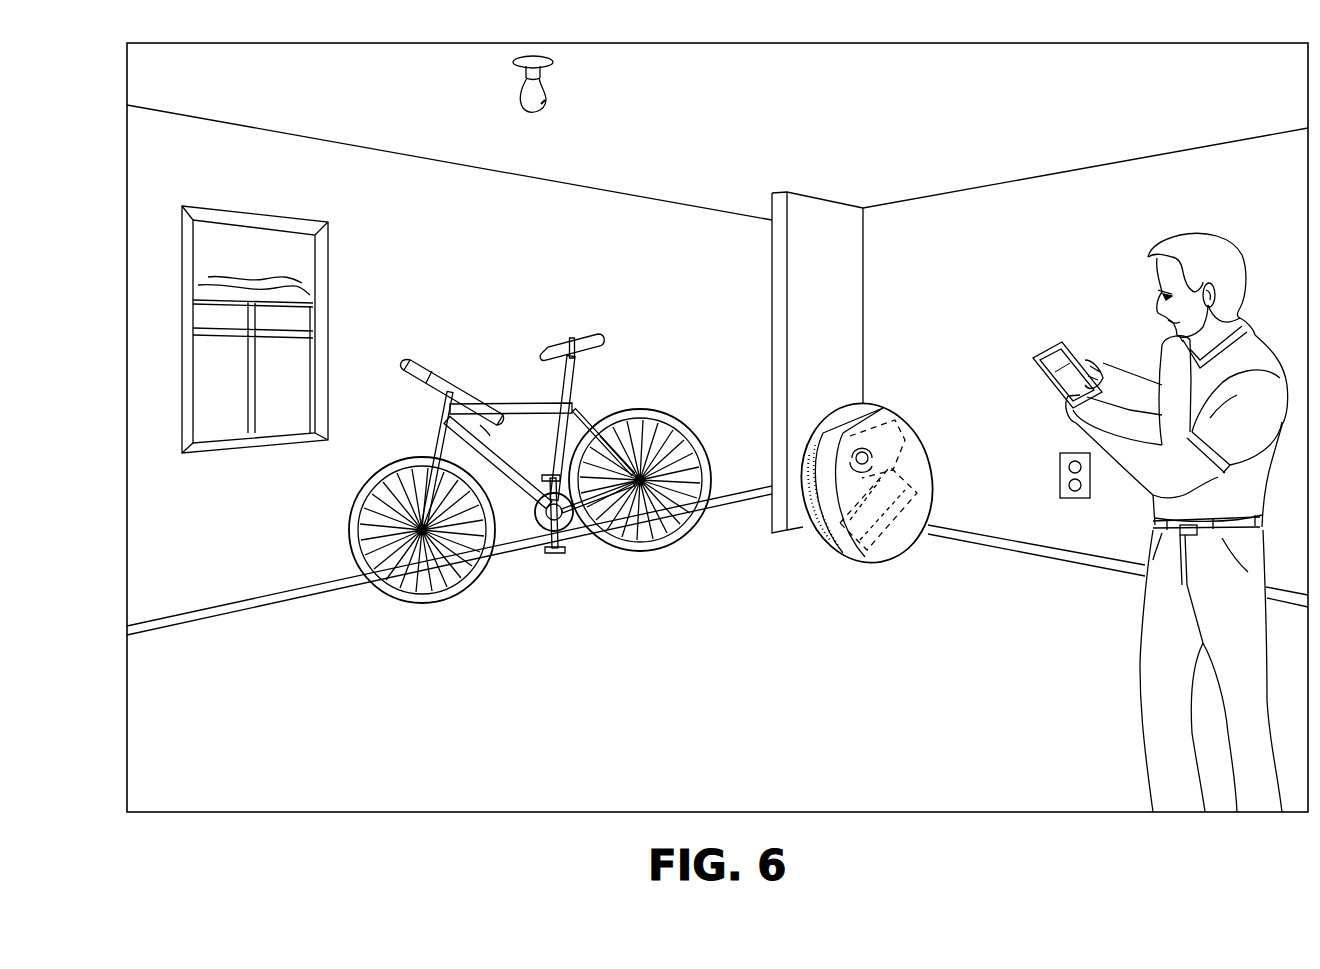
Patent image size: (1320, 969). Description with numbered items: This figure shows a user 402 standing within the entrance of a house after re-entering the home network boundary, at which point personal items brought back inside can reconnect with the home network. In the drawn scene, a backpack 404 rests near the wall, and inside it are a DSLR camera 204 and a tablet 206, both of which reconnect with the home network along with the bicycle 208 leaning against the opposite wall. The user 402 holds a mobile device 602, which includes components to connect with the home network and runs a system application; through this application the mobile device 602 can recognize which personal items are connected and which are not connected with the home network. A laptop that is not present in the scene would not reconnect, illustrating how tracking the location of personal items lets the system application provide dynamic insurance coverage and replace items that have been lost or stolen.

The bicycle 208 is at (518, 402).
The backpack 404 is at (893, 404).
The DSLR camera 204 is at (912, 433).
The tablet 206 is at (933, 472).
The mobile device 602 is at (1046, 347).
The user 402 is at (1225, 232).